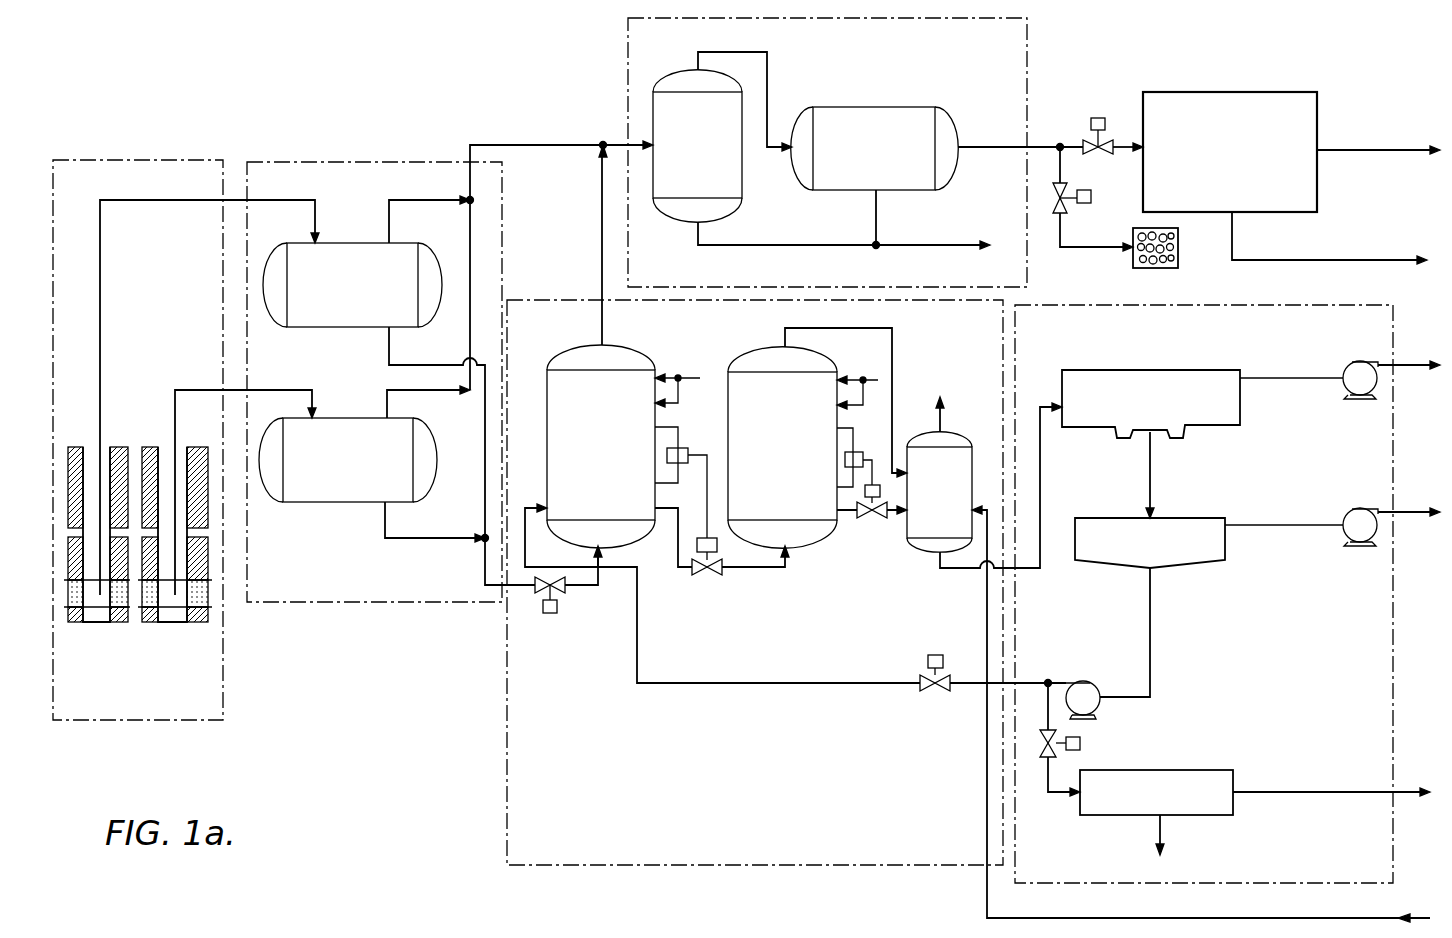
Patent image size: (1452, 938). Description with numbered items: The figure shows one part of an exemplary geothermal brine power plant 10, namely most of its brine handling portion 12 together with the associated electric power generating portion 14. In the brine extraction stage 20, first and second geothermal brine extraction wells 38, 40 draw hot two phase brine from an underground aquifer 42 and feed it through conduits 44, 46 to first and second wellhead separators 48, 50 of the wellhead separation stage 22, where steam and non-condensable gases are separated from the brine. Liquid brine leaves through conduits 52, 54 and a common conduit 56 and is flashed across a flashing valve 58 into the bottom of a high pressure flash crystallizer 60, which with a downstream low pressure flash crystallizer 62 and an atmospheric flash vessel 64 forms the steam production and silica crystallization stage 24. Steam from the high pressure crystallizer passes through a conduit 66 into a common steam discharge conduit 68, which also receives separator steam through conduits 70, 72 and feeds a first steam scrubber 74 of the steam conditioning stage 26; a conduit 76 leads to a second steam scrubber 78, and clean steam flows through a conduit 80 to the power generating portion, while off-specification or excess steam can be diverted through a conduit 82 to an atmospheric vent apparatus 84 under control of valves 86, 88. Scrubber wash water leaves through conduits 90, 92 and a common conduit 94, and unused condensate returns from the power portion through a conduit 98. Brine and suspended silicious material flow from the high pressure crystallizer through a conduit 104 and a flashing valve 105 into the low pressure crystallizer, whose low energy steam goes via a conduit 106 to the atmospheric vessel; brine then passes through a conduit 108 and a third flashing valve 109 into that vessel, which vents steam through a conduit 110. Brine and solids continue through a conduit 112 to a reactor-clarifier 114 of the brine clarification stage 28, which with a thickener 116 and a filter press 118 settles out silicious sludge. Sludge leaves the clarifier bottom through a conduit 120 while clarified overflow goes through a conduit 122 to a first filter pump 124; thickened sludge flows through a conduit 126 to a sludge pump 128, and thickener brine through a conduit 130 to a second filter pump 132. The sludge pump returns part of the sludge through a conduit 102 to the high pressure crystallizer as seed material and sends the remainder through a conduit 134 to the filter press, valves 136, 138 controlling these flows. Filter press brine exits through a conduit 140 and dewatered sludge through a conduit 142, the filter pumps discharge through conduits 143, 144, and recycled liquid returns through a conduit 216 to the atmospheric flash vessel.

The geothermal brine power plant 10 is at (396, 735).
The brine handling portion 12 is at (610, 780).
The electric power generating portion 14 is at (1232, 86).
The brine extraction stage 20 is at (147, 160).
The wellhead separation stage 22 is at (385, 162).
The steam production (flashing) and silica crystallization stage 24 is at (507, 708).
The steam conditioning stage 26 is at (628, 68).
The brine clarification stage 28 is at (1108, 305).
The first geothermal brine extraction well 38 is at (88, 447).
The second geothermal brine extraction well 40 is at (185, 447).
The underground aquifer 42 is at (205, 612).
The conduit 44 is at (103, 257).
The conduit 46 is at (173, 392).
The first wellhead separator 48 is at (364, 243).
The second wellhead separator 50 is at (362, 418).
The conduit 52 is at (388, 349).
The conduit 54 is at (385, 522).
The common conduit 56 is at (483, 566).
The flashing valve 58 is at (550, 613).
The high pressure flash crystallizer (HPX) 60 is at (652, 358).
The low pressure flash crystallizer (LPX) 62 is at (762, 350).
The atmospheric flash vessel 64 is at (962, 440).
The conduit 66 is at (600, 250).
The common steam discharge conduit 68 is at (575, 150).
The conduit 70 is at (434, 200).
The conduit 72 is at (434, 390).
The first steam scrubber 74 is at (674, 78).
The conduit 76 is at (768, 60).
The second (final) steam scrubber 78 is at (886, 107).
The conduit 80 is at (1010, 152).
The conduit 82 is at (1100, 244).
The atmospheric vent apparatus 84 is at (1178, 243).
The valve 86 is at (1091, 196).
The valve 88 is at (1098, 118).
The conduit 90 is at (798, 245).
The conduit 92 is at (872, 213).
The common conduit 94 is at (968, 250).
The conduit 98 is at (1384, 263).
The conduit 102 is at (882, 685).
The conduit 104 is at (697, 560).
The flashing valve 105 is at (712, 578).
The conduit 106 is at (893, 342).
The conduit 108 is at (897, 518).
The third flashing valve 109 is at (872, 522).
The conduit 110 is at (945, 420).
The conduit 112 is at (1042, 468).
The reactor-clarifier 114 is at (1140, 370).
The thickener 116 is at (1180, 518).
The filter press 118 is at (1170, 770).
The conduit 120 is at (1148, 487).
The conduit 122 is at (1296, 380).
The first filter pump 124 is at (1364, 361).
The conduit 126 is at (1148, 622).
The sludge pump 128 is at (1084, 681).
The conduit 130 is at (1296, 527).
The second filter pump 132 is at (1364, 508).
The conduit 134 is at (1060, 795).
The valve 136 is at (934, 655).
The valve 138 is at (1080, 741).
The conduit 140 is at (1402, 792).
The conduit 142 is at (1162, 830).
The conduit 143 is at (1404, 365).
The conduit 144 is at (1404, 512).
The conduit 216 is at (1378, 918).